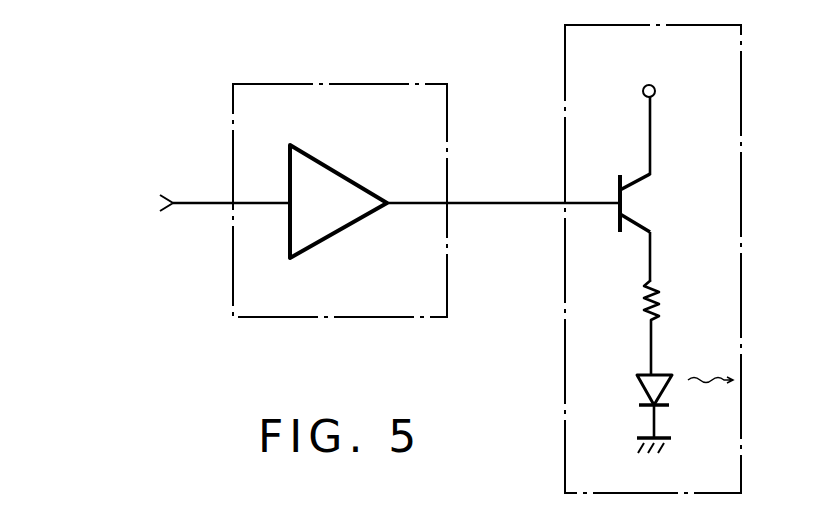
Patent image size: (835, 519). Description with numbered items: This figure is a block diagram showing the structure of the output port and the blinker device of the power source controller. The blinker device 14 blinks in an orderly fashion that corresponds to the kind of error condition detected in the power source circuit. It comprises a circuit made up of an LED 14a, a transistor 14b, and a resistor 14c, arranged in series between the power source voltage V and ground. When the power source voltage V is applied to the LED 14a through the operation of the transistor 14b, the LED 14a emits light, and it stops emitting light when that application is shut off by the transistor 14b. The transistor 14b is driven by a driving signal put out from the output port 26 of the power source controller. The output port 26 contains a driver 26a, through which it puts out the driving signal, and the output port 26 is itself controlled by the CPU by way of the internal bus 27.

The internal bus 27 is at (134, 206).
The output port 26 is at (337, 84).
The driver 26a is at (335, 242).
The blinker device 14 is at (741, 84).
The transistor 14b is at (638, 198).
The resistor 14c is at (666, 306).
The LED 14a is at (668, 390).